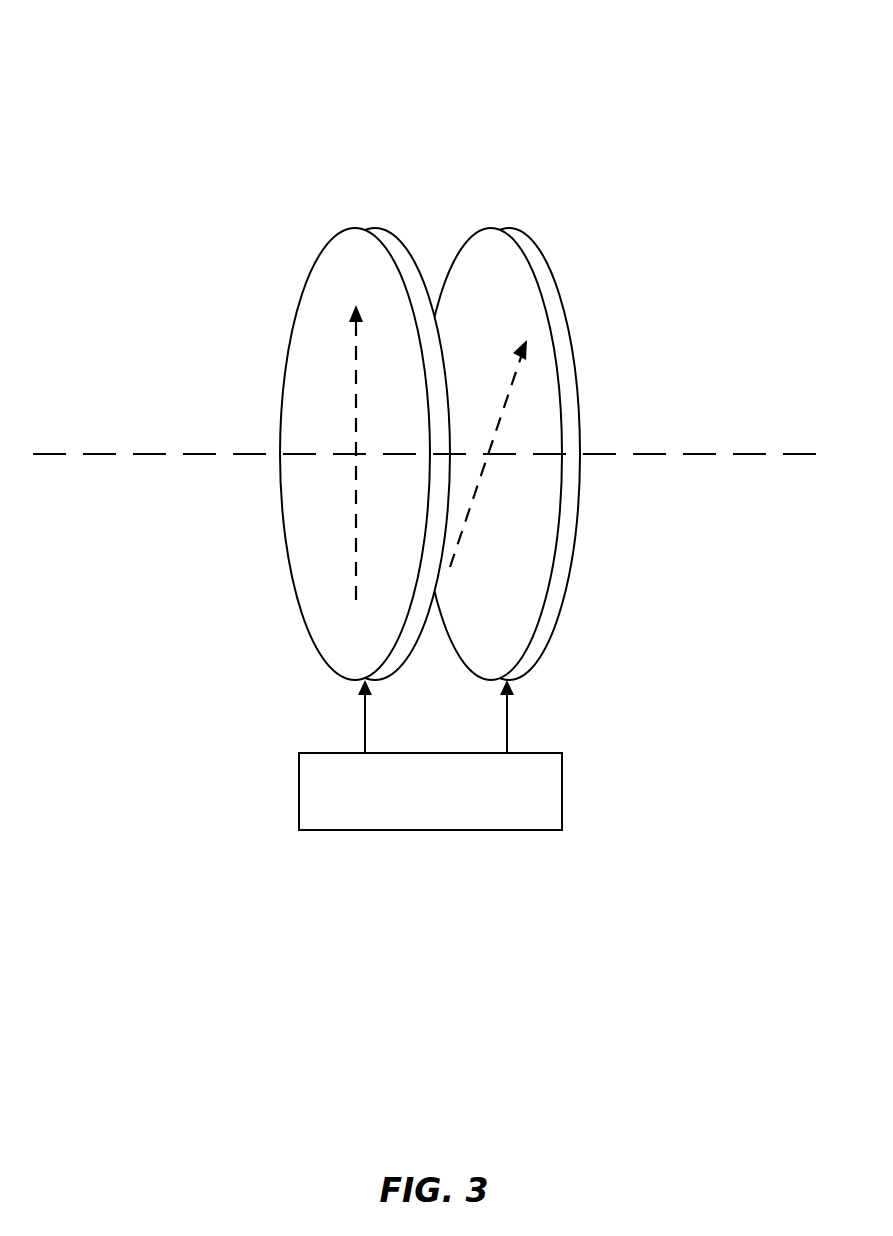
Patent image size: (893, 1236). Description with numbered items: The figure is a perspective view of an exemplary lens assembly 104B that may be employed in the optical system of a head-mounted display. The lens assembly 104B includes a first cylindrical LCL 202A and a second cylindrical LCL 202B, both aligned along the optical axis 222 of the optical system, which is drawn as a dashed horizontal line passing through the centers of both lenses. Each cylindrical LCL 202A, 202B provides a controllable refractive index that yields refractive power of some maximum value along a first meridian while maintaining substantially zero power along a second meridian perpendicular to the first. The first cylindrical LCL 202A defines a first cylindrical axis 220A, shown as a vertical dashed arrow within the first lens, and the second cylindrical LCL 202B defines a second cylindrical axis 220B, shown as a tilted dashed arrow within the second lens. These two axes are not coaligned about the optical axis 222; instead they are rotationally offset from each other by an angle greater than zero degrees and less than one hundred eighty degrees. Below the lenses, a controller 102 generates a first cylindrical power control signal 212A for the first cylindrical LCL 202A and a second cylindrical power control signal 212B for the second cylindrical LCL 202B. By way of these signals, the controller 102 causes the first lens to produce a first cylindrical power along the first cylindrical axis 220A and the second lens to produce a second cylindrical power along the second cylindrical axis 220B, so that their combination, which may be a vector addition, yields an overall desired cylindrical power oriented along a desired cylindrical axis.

The lens assembly 104B is at (288, 141).
The first cylindrical LCL 202A is at (290, 342).
The second cylindrical LCL 202B is at (572, 343).
The first cylindrical axis 220A is at (357, 548).
The second cylindrical axis 220B is at (457, 545).
The optical axis 222 is at (707, 454).
The controller 102 is at (430, 791).
The first cylindrical power control signal 212A is at (363, 718).
The second cylindrical power control signal 212B is at (510, 718).